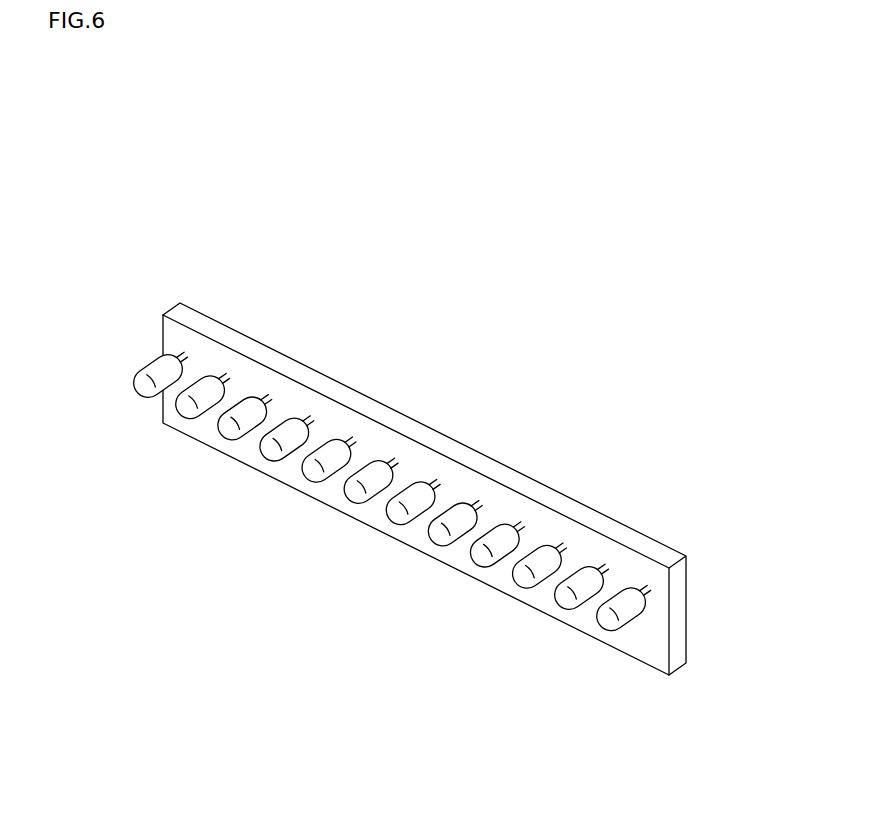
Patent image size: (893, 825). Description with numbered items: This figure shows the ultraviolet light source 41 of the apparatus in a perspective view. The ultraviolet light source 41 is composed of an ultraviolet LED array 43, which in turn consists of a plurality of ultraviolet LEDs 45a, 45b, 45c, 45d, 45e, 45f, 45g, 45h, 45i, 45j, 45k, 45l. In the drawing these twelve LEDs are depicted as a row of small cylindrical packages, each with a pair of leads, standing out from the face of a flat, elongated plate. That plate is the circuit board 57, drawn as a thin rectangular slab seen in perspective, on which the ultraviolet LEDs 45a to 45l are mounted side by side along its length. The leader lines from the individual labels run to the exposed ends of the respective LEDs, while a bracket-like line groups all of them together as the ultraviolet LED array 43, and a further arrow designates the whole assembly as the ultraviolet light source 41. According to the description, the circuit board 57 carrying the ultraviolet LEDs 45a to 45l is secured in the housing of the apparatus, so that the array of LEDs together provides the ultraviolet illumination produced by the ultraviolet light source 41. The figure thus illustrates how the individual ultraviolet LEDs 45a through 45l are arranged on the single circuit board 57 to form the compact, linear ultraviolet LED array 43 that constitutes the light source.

The ultraviolet light source 41 is at (112, 213).
The ultraviolet LED array 43 is at (580, 755).
The ultraviolet LED 45a is at (145, 397).
The ultraviolet LED 45b is at (187, 418).
The ultraviolet LED 45c is at (229, 439).
The ultraviolet LED 45d is at (271, 461).
The ultraviolet LED 45e is at (313, 482).
The ultraviolet LED 45f is at (355, 503).
The ultraviolet LED 45g is at (398, 524).
The ultraviolet LED 45h is at (440, 545).
The ultraviolet LED 45i is at (482, 567).
The ultraviolet LED 45j is at (524, 588).
The ultraviolet LED 45k is at (566, 609).
The ultraviolet LED 45l is at (608, 630).
The circuit board 57 is at (687, 605).